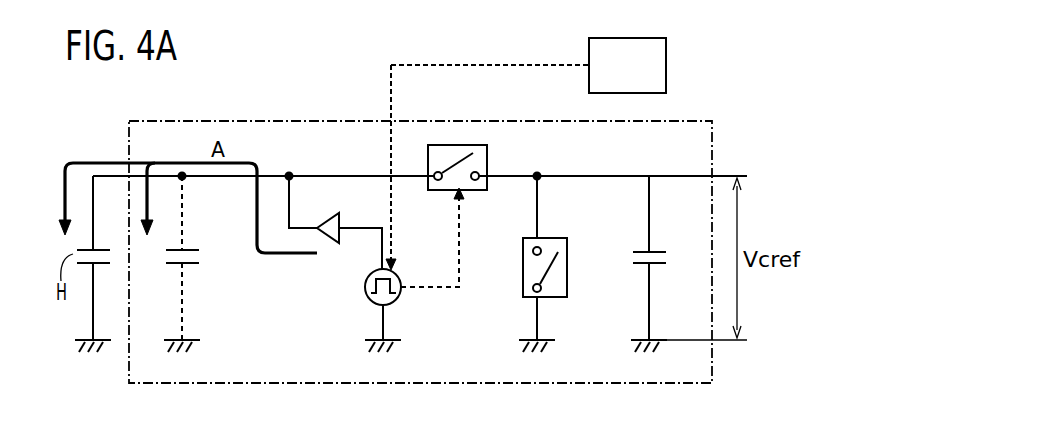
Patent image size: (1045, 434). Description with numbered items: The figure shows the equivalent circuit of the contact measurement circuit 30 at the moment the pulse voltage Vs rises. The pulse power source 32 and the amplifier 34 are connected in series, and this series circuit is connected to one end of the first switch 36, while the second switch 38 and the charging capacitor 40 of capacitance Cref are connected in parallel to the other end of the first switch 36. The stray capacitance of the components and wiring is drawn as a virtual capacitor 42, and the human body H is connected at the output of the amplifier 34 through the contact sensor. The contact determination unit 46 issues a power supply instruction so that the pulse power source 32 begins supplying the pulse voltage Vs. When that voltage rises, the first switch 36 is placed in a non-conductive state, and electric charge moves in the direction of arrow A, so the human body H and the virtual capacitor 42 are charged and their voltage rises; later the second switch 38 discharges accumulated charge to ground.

The contact measurement circuit 30 is at (213, 120).
The pulse power source 32 is at (368, 302).
The amplifier 34 is at (337, 244).
The first switch 36 is at (488, 163).
The second switch 38 is at (523, 272).
The charging capacitor 40 is at (662, 257).
The virtual capacitor 42 is at (195, 257).
The contact determination unit 46 is at (666, 65).